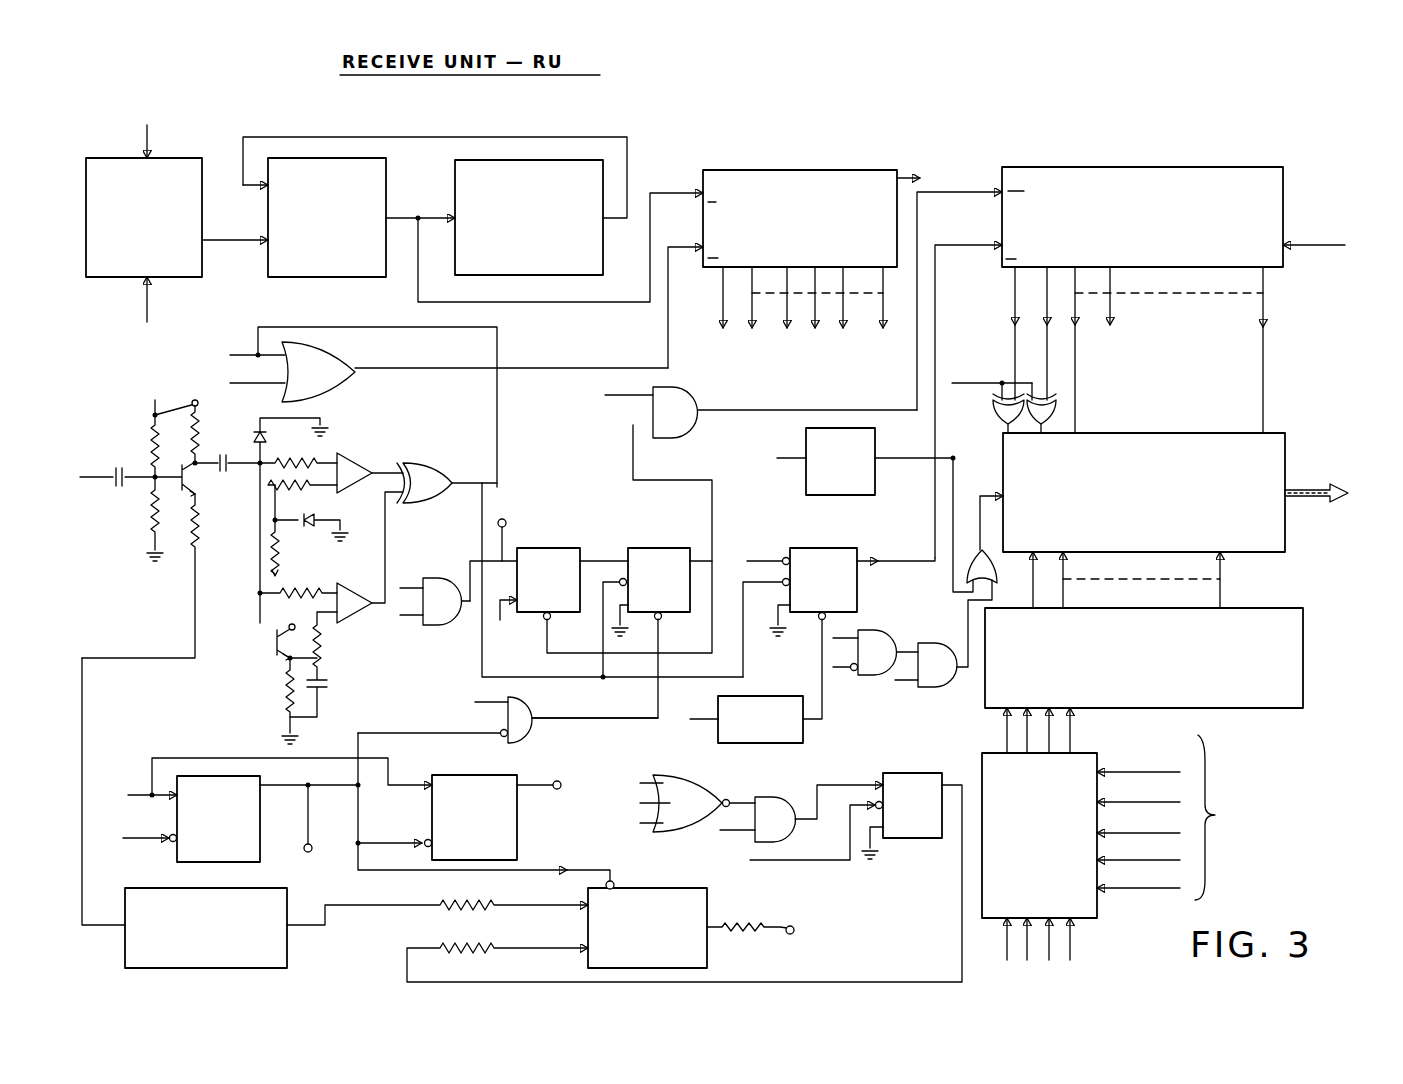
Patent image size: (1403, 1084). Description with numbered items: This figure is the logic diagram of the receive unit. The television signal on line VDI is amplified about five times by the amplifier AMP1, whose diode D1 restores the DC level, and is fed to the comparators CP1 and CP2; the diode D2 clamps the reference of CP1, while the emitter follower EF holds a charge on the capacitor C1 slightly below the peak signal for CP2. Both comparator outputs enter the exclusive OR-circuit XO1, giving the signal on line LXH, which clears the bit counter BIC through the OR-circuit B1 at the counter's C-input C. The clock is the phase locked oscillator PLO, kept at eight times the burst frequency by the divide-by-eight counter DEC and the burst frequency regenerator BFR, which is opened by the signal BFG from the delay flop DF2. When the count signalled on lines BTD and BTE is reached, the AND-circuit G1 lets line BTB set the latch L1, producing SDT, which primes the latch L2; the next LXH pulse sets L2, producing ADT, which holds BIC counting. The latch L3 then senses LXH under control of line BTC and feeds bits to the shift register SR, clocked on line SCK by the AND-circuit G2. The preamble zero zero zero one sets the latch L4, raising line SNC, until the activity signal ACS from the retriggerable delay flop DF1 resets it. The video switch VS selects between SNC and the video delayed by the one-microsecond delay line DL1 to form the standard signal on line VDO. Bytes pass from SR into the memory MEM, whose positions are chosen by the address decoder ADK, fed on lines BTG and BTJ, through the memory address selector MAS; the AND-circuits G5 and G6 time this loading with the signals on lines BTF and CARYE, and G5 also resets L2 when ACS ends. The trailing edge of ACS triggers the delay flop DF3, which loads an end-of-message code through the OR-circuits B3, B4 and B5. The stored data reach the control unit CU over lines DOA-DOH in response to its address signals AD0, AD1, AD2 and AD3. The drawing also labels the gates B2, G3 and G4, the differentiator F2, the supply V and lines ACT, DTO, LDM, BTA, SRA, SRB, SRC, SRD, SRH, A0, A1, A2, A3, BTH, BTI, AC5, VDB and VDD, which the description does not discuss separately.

The burst frequency regenerator BFR is at (170, 268).
The phase locked oscillator PLO is at (352, 268).
The divide-by-eight counter DEC is at (552, 264).
The bit counter BIC is at (822, 231).
The shift register SR is at (1160, 236).
The memory MEM is at (1180, 516).
The memory address selector MAS is at (1170, 696).
The address decoder ADK is at (1070, 876).
The control unit CU is at (1285, 856).
The OR-circuit B1 is at (320, 382).
The NOR gate B2 is at (690, 812).
The OR-circuit B3 is at (995, 407).
The OR-circuit B4 is at (1052, 410).
The OR-circuit B5 is at (992, 560).
The AND-circuit G1 is at (438, 625).
The AND-circuit G2 is at (688, 392).
The AND gate G3 is at (530, 708).
The AND gate G4 is at (780, 806).
The AND-circuit G5 is at (925, 688).
The AND-circuit G6 is at (885, 642).
The exclusive OR-circuit XO1 is at (428, 463).
The comparator CP1 is at (355, 453).
The comparator CP2 is at (358, 590).
The amplifier AMP1 is at (166, 519).
The emitter follower EF is at (268, 652).
The capacitor C1 is at (341, 687).
The diode D1 is at (291, 440).
The diode D2 is at (312, 528).
The latch L1 is at (560, 601).
The latch L2 is at (670, 601).
The latch L3 is at (836, 601).
The latch L4 is at (925, 826).
The re-triggerable delay-flop DF1 is at (235, 858).
The delay flop DF2 is at (496, 850).
The delay flop DF3 is at (858, 492).
The differentiator F2 is at (775, 742).
The one microsecond delay line DL1 is at (228, 962).
The video switch VS is at (662, 965).
The burst frequency gate signal line BFG is at (147, 128).
The video output line VDO is at (147, 300).
The video input line VDI is at (100, 477).
The ADT signal line ADT is at (1318, 245).
The activity signal ACT is at (517, 368).
The LXH signal line LXH is at (140, 838).
The CARYE signal line CARYE is at (725, 866).
The shift clock line SCK is at (780, 410).
The activity indicating signal line ACS is at (788, 458).
The SDT signal line SDT is at (598, 561).
The data output signal DTO is at (905, 561).
The load memory signal LDM is at (980, 496).
The bit counter output A BTA is at (723, 280).
The bit counter output line BTB is at (752, 285).
The bit counter output line BTC is at (787, 285).
The bit counter output line BTJ is at (883, 322).
The shift register output A SRA is at (1015, 287).
The shift register output B SRB is at (1047, 280).
The shift register output C SRC is at (1075, 285).
The shift register output D SRD is at (1110, 303).
The shift register output H SRH is at (1263, 302).
The digital data lines DOA-DOH is at (1330, 470).
The address line 0 A0 is at (1007, 745).
The address line 1 A1 is at (1027, 730).
The address line 2 A2 is at (1049, 735).
The address line 3 A3 is at (1070, 735).
The address signal cable AD0 is at (1112, 772).
The address signal cable AD1 is at (1118, 802).
The address signal cable AD2 is at (1118, 833).
The address signal cable AD3 is at (1125, 860).
The bit counter output line BTG is at (1007, 945).
The bit counter output H BTH is at (1027, 940).
The bit counter output I BTI is at (1049, 940).
The access signal 5 AC5 is at (850, 638).
The bit counter output line BTF is at (904, 680).
The synchronizing signal line SNC is at (950, 785).
The video buffered signal VDB is at (82, 728).
The video delayed signal VDD is at (303, 910).
The bit counter output line BTD is at (400, 588).
The bit counter output line BTE is at (400, 615).
The supply voltage V is at (506, 528).
The C-input of the bit counter C is at (227, 463).